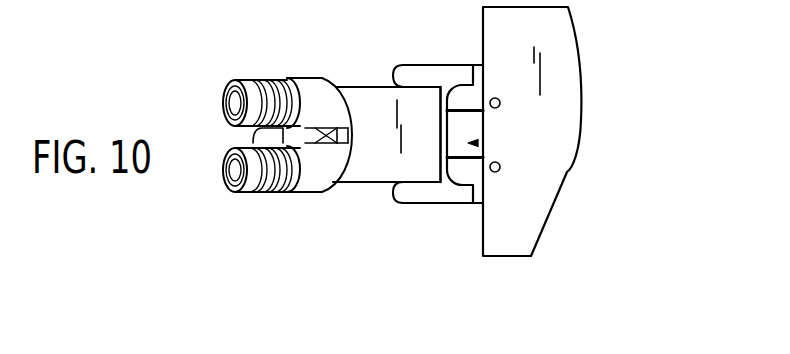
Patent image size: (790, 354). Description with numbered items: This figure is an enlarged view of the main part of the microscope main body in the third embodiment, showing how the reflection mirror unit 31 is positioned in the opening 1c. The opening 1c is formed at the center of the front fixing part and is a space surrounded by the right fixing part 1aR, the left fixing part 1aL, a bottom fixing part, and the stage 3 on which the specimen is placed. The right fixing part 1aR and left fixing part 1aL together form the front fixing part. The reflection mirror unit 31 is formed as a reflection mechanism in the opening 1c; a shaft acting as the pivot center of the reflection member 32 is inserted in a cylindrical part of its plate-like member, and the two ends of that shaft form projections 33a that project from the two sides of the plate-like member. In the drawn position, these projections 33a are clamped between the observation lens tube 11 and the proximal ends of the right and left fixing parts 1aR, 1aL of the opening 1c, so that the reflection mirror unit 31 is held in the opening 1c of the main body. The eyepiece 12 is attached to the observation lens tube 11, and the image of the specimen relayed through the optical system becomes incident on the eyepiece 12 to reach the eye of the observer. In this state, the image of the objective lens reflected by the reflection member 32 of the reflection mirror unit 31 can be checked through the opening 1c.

The stage 3 is at (558, 30).
The observation lens tube 11 is at (373, 175).
The eyepiece 12 is at (313, 188).
The projections 33a is at (426, 102).
The opening 1c is at (446, 93).
The left fixing part 1aL is at (463, 88).
The right fixing part 1aR is at (462, 178).
The reflection member 32 is at (477, 127).
The reflection mirror unit 31 is at (478, 143).